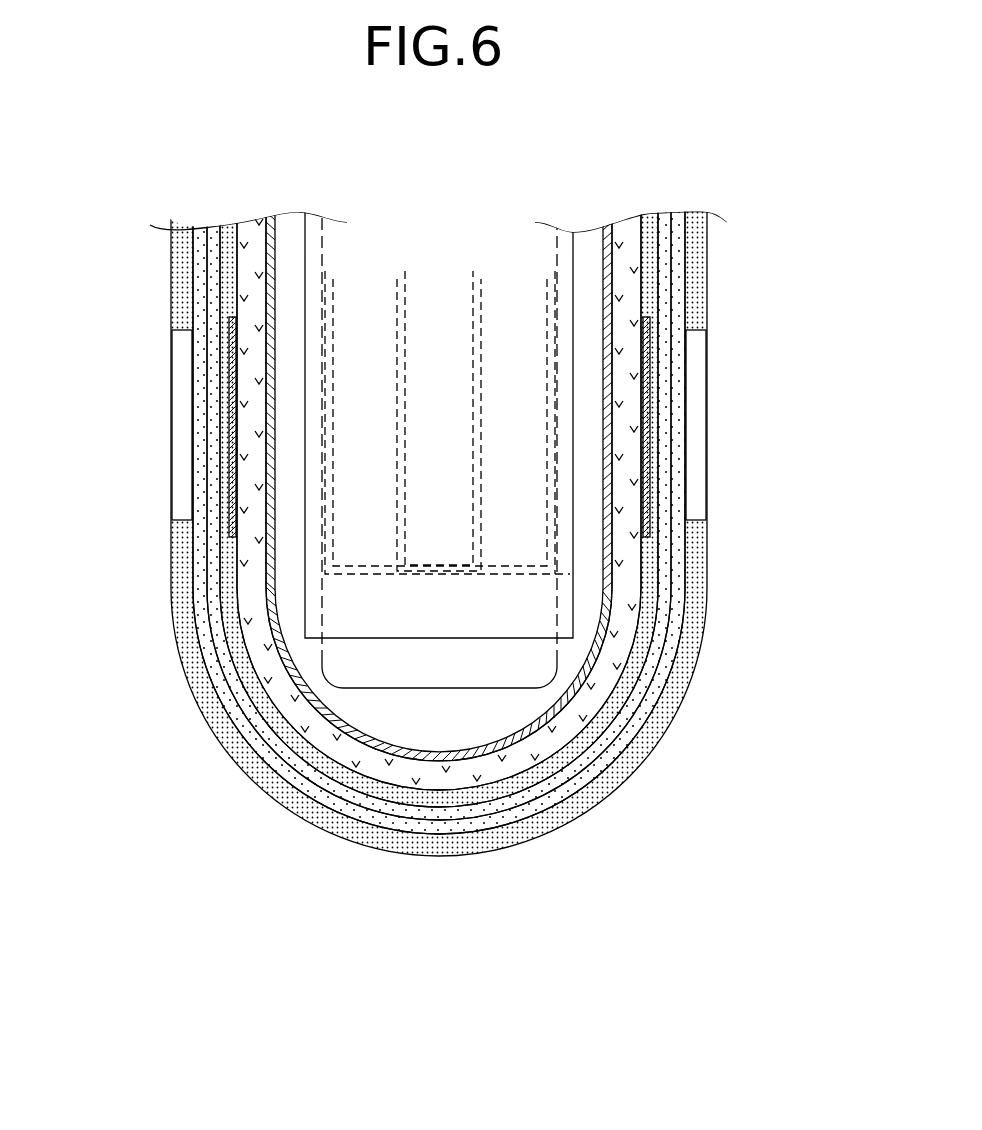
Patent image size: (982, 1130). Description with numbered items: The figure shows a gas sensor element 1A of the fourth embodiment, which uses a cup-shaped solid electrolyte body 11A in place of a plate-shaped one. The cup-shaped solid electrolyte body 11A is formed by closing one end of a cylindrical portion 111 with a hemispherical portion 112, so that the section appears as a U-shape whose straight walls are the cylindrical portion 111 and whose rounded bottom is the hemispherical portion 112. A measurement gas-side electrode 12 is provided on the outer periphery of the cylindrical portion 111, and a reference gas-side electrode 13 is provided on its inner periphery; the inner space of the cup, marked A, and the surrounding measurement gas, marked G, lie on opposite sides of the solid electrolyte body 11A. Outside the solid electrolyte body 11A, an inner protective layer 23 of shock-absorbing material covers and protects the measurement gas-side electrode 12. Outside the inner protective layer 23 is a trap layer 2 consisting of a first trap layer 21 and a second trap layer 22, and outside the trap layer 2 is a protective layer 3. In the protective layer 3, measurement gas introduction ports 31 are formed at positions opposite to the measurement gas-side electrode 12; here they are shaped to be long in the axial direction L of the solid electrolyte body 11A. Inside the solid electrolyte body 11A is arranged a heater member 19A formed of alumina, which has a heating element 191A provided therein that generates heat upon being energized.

The gas sensor element 1A is at (637, 158).
The heater member 19A is at (403, 245).
The heating element 191A is at (498, 268).
The cylindrical portion 111 is at (625, 288).
The measurement gas introduction ports 31 is at (692, 388).
The measurement gas-side electrode 12 is at (647, 433).
The reference gas-side electrode 13 is at (592, 566).
The reference gas chamber A is at (293, 603).
The measured gas G is at (162, 668).
The axial direction L is at (808, 640).
The cup-shaped solid electrolyte body 11A is at (522, 565).
The inner protective layer 23 is at (283, 733).
The first trap layer 21 is at (315, 793).
The second trap layer 22 is at (365, 798).
The trap layer 2 is at (410, 577).
The hemispherical portion 112 is at (450, 782).
The protective layer 3 is at (517, 557).